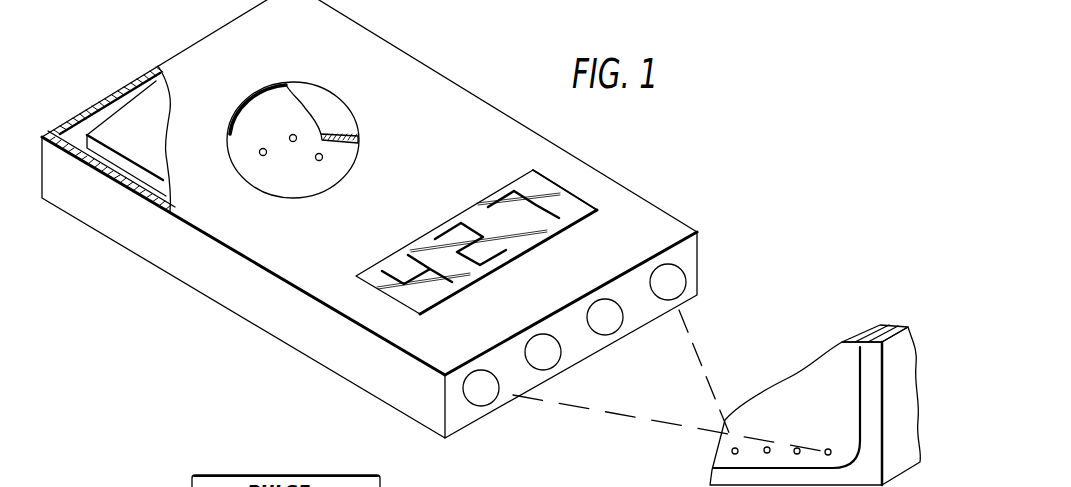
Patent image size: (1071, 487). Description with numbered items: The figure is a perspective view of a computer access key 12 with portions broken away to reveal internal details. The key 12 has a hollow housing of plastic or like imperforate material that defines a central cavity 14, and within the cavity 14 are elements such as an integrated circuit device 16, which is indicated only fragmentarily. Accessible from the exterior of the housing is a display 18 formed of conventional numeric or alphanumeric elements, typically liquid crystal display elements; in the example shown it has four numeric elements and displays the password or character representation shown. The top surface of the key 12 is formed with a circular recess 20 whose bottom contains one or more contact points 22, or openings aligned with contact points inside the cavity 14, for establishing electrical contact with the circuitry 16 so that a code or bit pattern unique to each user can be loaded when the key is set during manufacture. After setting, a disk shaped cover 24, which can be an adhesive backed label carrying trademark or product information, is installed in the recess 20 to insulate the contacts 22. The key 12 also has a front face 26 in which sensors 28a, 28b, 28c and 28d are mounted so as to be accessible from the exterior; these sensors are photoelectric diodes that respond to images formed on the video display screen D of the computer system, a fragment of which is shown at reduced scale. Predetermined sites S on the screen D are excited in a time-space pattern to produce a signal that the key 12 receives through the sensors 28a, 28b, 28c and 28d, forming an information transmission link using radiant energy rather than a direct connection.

The key 12 is at (653, 203).
The central cavity 14 is at (131, 98).
The integrated circuit device 16 is at (143, 141).
The display 18 is at (471, 282).
The circular recess 20 is at (302, 197).
The contact points 22 is at (315, 158).
The disk shaped cover 24 is at (286, 90).
The front face 26 is at (460, 414).
The sensor 28a is at (497, 400).
The sensor 28b is at (560, 361).
The sensor 28c is at (620, 329).
The sensor 28d is at (683, 295).
The video display screen D is at (801, 369).
The sites S is at (797, 449).